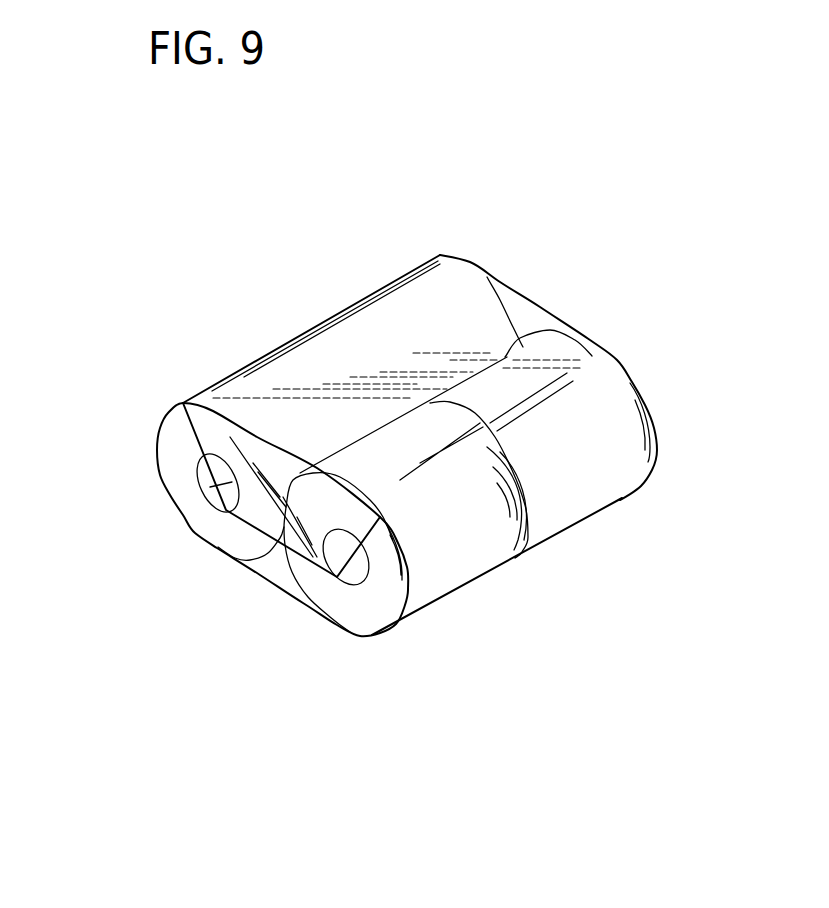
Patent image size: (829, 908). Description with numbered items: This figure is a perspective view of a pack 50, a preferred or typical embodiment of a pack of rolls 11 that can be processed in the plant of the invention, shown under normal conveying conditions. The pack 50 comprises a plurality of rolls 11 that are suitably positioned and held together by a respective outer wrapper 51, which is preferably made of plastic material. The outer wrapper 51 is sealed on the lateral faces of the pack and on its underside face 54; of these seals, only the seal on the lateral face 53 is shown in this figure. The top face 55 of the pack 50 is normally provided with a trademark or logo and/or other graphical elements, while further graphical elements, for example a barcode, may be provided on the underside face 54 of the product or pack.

The roll 11 is at (383, 300).
The pack 50 is at (448, 225).
The outer wrapper 51 is at (339, 328).
The lateral face 53 is at (500, 278).
The underside face 54 is at (338, 632).
The top face 55 is at (528, 327).